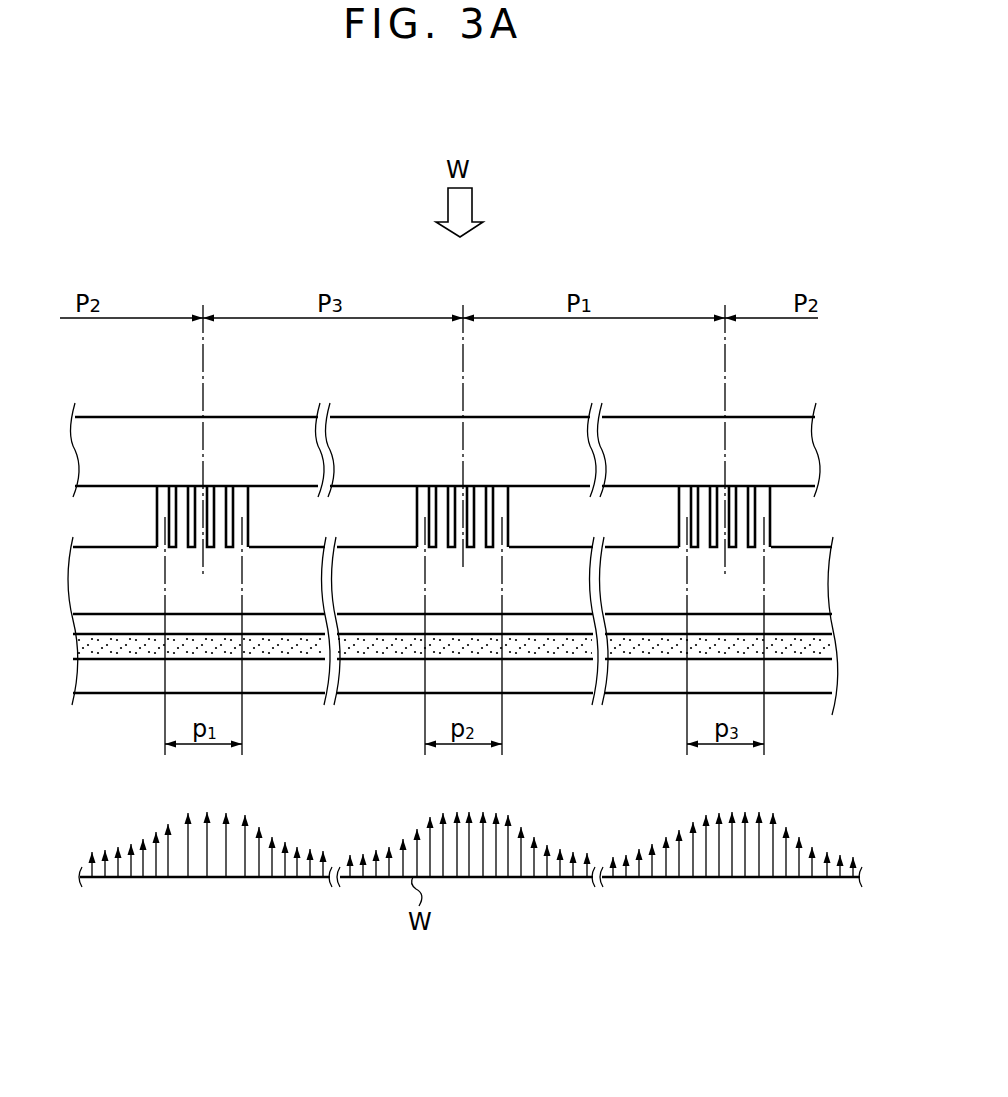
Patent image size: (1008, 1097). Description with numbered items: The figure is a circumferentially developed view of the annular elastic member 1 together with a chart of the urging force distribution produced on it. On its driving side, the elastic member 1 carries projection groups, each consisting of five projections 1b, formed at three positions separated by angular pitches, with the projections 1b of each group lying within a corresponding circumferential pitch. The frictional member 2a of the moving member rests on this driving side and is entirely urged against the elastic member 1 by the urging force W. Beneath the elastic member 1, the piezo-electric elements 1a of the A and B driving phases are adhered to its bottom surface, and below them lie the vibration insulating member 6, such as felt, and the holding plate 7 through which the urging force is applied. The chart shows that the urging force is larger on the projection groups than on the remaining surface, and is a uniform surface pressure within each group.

The frictional member 2a is at (798, 444).
The projections 1b is at (767, 502).
The elastic member 1 is at (817, 577).
The piezo-electric elements 1a is at (827, 625).
The vibration insulating member 6 is at (818, 653).
The holding plate 7 is at (818, 683).